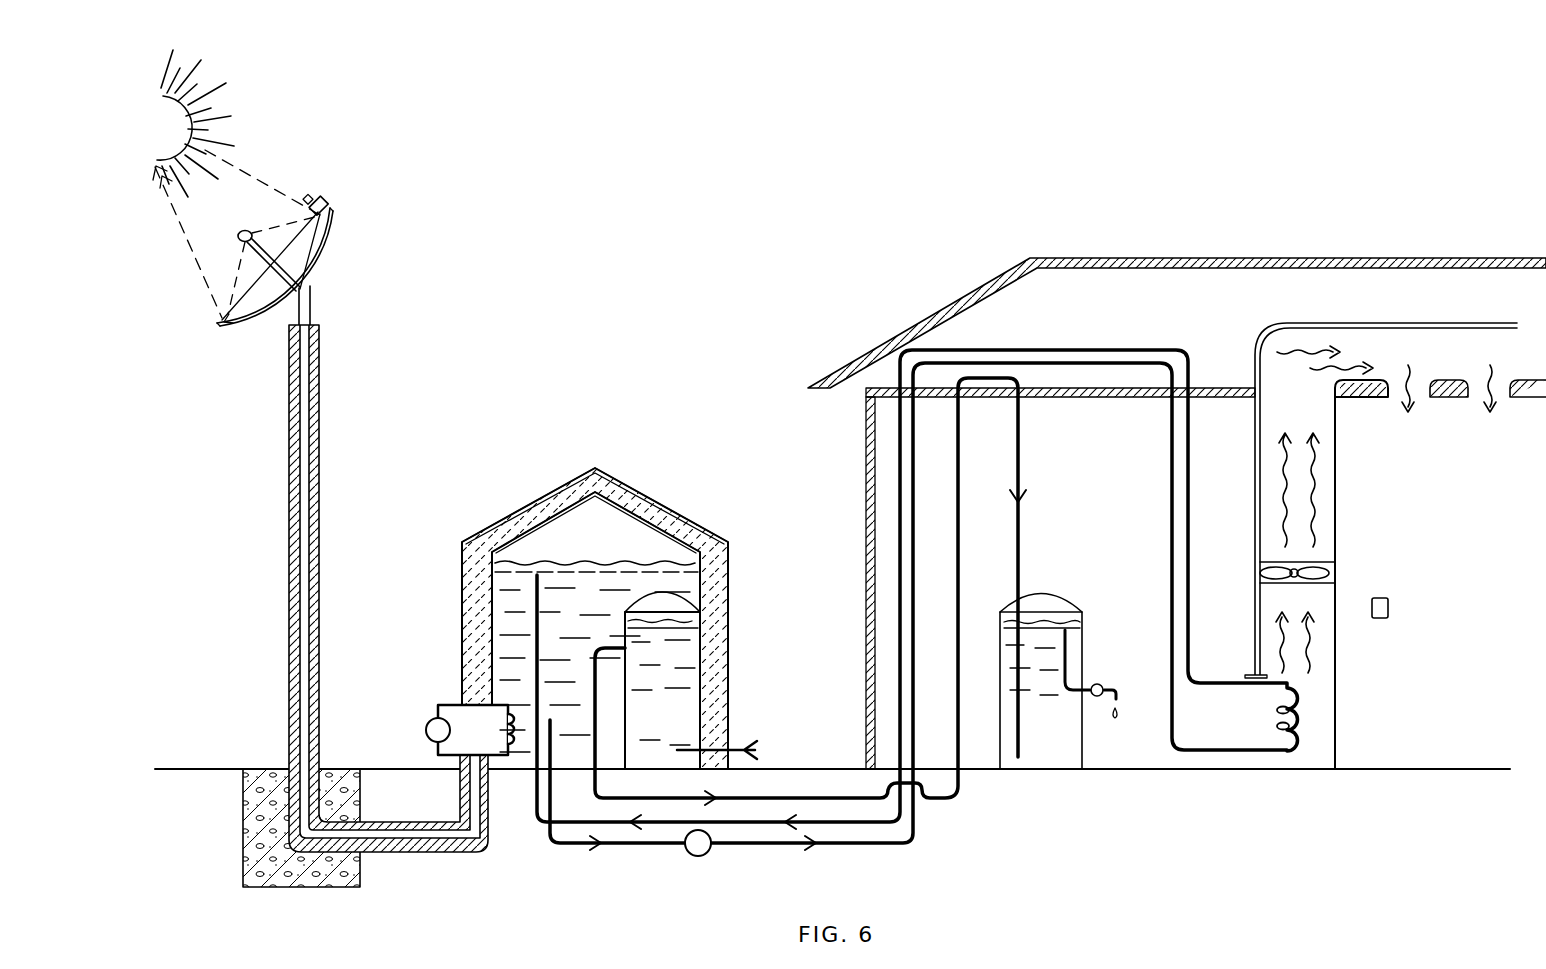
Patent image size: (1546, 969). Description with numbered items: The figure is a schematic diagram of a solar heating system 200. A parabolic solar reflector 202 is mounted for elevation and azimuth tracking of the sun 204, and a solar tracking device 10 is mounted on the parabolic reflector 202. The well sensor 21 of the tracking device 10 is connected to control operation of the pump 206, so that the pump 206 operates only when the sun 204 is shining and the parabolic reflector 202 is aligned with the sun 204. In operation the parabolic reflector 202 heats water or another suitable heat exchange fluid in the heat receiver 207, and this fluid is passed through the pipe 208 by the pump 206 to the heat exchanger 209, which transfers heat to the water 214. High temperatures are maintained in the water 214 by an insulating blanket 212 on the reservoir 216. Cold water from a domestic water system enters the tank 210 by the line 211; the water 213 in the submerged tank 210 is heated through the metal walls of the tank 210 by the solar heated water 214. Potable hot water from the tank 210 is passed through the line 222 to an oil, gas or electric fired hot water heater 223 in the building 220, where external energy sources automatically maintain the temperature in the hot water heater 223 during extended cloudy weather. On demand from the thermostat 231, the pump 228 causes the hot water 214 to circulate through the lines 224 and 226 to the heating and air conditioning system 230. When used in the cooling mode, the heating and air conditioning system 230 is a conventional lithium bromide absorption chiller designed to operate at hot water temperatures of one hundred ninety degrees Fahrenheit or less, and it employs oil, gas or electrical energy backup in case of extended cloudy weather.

The solar tracking device 10 is at (326, 207).
The well sensor 21 is at (311, 200).
The solar heating system 200 is at (608, 272).
The parabolic solar reflector 202 is at (318, 260).
The sun 204 is at (218, 100).
The pump 206 is at (433, 724).
The heat receiver 207 is at (243, 240).
The pipe 208 is at (308, 432).
The heat exchanger 209 is at (514, 718).
The tank 210 is at (598, 684).
The line 211 is at (748, 745).
The insulating blanket 212 is at (463, 590).
The water 213 is at (676, 731).
The water 214 is at (560, 575).
The reservoir 216 is at (580, 523).
The building 220 is at (980, 282).
The line 222 is at (1017, 537).
The hot water heater 223 is at (1082, 652).
The line 224 is at (757, 846).
The line 226 is at (840, 826).
The pump 228 is at (700, 857).
The heating and air conditioning system 230 is at (1350, 460).
The thermostat 231 is at (1390, 609).